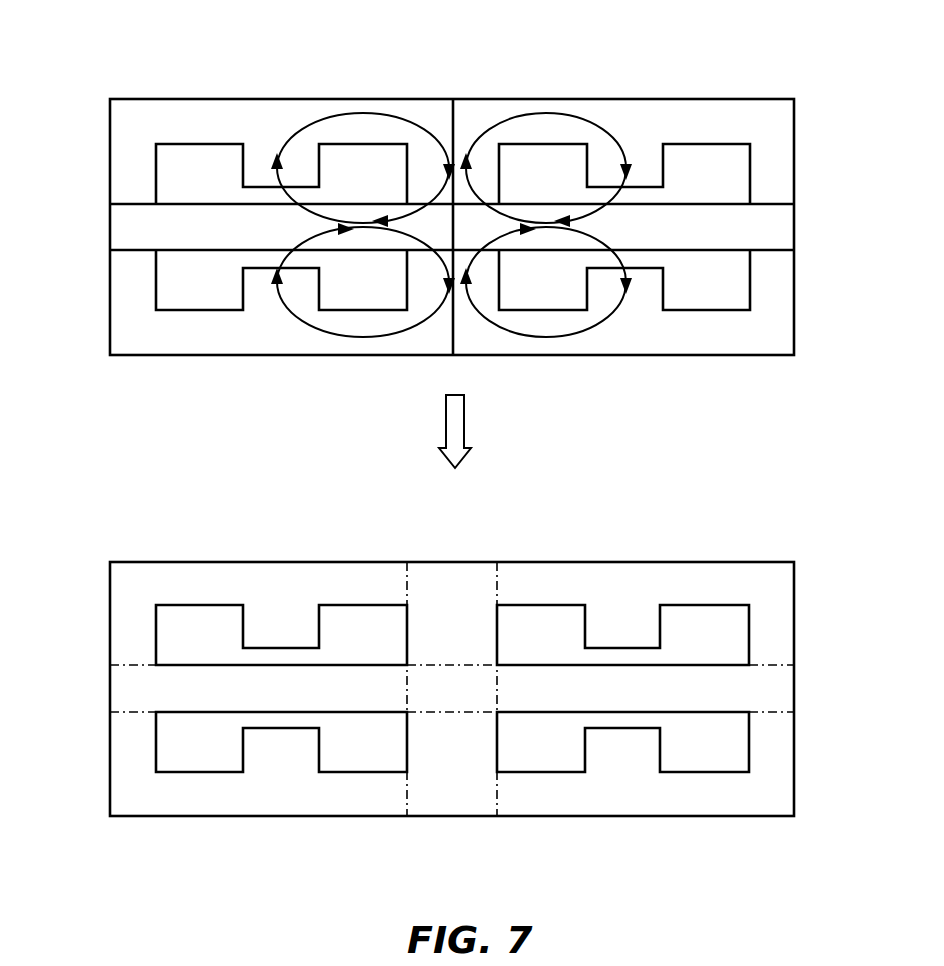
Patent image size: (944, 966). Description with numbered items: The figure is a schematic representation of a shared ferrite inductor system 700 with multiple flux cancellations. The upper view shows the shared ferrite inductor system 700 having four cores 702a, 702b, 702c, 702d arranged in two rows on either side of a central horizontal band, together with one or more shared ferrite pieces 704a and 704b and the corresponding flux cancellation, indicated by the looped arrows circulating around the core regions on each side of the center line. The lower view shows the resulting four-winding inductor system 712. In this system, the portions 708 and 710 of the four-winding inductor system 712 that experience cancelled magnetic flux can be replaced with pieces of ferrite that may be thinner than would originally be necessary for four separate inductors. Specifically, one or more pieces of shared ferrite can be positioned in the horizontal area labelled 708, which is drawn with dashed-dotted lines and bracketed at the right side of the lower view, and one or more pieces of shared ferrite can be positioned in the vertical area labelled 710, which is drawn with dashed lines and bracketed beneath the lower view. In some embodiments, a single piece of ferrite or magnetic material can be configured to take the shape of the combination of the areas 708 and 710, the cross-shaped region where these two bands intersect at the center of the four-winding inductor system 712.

The shared ferrite inductor system 700 is at (200, 48).
The core 702a is at (127, 123).
The core 702b is at (777, 124).
The core 702c is at (127, 328).
The core 702d is at (777, 329).
The shared ferrite piece 704a is at (127, 228).
The shared ferrite piece 704b is at (777, 229).
The portion of the four-winding inductor system 708 is at (798, 665).
The portion of the four-winding inductor system 710 is at (497, 822).
The four-winding inductor system 712 is at (443, 657).